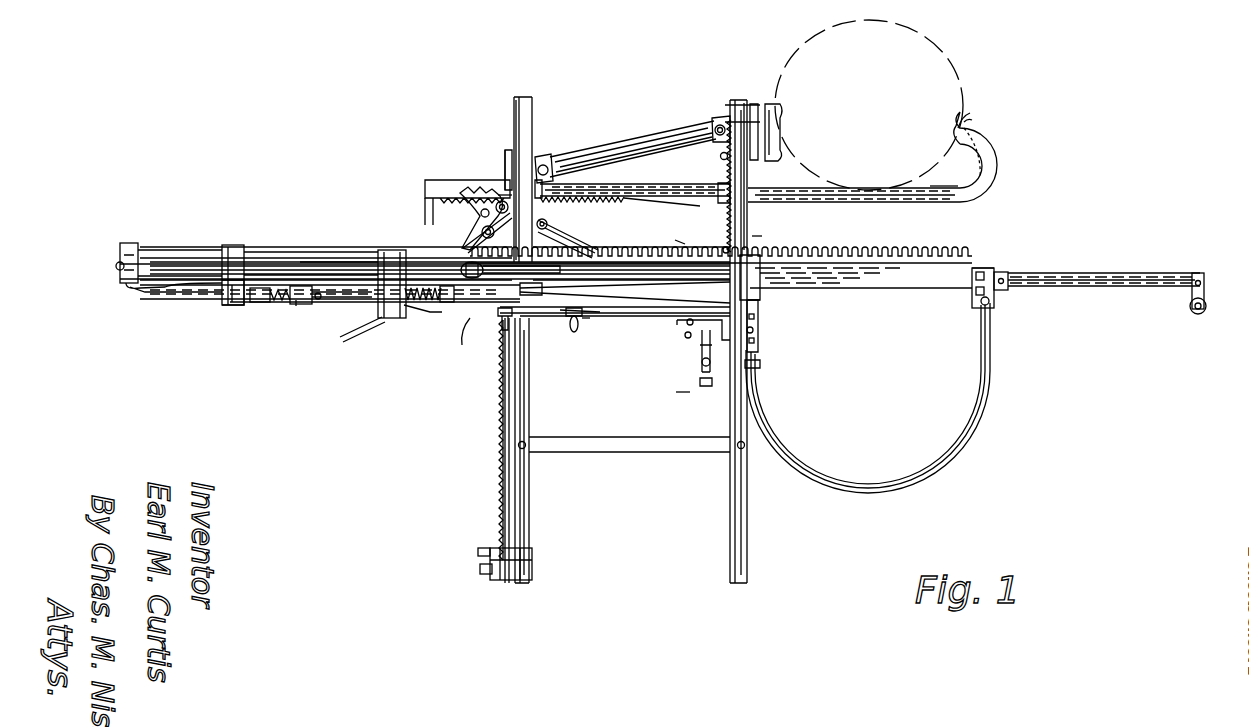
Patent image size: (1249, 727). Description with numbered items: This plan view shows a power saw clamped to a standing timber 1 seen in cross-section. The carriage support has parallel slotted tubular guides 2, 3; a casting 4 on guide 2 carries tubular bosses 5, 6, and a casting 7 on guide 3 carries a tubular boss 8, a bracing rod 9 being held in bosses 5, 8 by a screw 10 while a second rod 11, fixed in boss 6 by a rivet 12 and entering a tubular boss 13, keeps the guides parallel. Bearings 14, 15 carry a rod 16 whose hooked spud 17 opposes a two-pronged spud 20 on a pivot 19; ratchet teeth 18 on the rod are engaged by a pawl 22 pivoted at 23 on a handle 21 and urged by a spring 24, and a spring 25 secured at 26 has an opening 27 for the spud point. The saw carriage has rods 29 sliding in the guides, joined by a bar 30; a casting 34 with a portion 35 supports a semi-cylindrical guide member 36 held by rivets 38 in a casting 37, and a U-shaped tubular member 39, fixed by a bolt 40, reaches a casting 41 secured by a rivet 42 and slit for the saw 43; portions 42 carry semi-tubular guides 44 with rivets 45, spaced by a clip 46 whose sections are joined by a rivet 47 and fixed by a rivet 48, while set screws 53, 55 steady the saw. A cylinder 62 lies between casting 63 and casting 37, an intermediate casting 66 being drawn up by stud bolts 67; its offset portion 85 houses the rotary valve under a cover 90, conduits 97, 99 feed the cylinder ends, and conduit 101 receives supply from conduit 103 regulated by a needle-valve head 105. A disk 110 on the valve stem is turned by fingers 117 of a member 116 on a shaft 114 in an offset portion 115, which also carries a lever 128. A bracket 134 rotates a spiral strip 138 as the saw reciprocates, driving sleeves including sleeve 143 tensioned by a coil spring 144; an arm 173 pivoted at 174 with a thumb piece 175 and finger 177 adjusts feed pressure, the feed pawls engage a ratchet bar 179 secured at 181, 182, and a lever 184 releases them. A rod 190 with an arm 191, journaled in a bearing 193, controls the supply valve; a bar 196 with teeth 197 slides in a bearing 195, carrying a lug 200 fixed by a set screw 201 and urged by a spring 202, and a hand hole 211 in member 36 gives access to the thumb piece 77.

The timber 1 is at (950, 75).
The tubular guide 2 is at (531, 100).
The tubular guide 3 is at (745, 98).
The casting 4 is at (508, 152).
The tubular boss 5 is at (545, 155).
The tubular boss 6 is at (547, 222).
The casting 7 is at (720, 112).
The tubular boss 8 is at (718, 134).
The bracing rod 9 is at (620, 140).
The screw or rivet 10 is at (550, 160).
The second rod 11 is at (613, 250).
The rivet or screw 12 is at (590, 208).
The tubular boss 13 is at (530, 288).
The bearing 14 is at (510, 63).
The bearing 15 is at (500, 195).
The rod 16 is at (852, 208).
The spud 17 is at (994, 163).
The ratchet teeth 18 is at (652, 204).
The pivot 19 is at (750, 110).
The two-pronged spud 20 is at (786, 150).
The handle 21 is at (460, 242).
The pawl 22 is at (440, 186).
The pivot 23 is at (730, 103).
The spring 24 is at (470, 226).
The spring 25 is at (968, 128).
The securing point 26 is at (935, 180).
The opening 27 is at (952, 148).
The rods 29 is at (530, 520).
The bar 30 is at (628, 440).
The casting 34 is at (756, 302).
The portion 35 is at (724, 248).
The member 36 is at (667, 237).
The casting 37 is at (375, 252).
The rivets 38 is at (405, 258).
The U-shaped tubular member 39 is at (830, 478).
The bolt 40 is at (762, 336).
The casting 41 is at (997, 303).
The rivet 42 is at (995, 268).
The saw 43 is at (887, 290).
The semi-tubular member 44 is at (1105, 273).
The rivets 45 is at (1005, 275).
The clip 46 is at (1189, 318).
The rivet 47 is at (1190, 305).
The rivet 48 is at (1194, 278).
The set screw 53 is at (780, 225).
The set screws 55 is at (978, 266).
The tubular member 62 is at (270, 252).
The casting 63 is at (126, 258).
The casting 66 is at (232, 247).
The stud bolts 67 is at (150, 250).
The thumb piece 77 is at (462, 270).
The offset portion 85 is at (238, 302).
The cover 90 is at (222, 292).
The conduit 97 is at (160, 290).
The conduit 99 is at (365, 292).
The conduit 101 is at (272, 302).
The conduit 103 is at (336, 312).
The operating head 105 is at (405, 318).
The disk 110 is at (280, 302).
The shaft 114 is at (325, 302).
The offset portion 115 is at (395, 318).
The member 116 is at (296, 304).
The fingers 117 is at (292, 302).
The lever 128 is at (420, 318).
The bracket 134 is at (464, 308).
The spiral strip 138 is at (680, 325).
The sleeve 143 is at (425, 322).
The coil spring 144 is at (451, 336).
The arm 173 is at (700, 383).
The pivot 174 is at (686, 333).
The thumb piece 175 is at (700, 368).
The finger 177 is at (700, 355).
The bar 179 is at (676, 396).
The securing point 181 is at (722, 158).
The securing point 182 is at (724, 238).
The lever 184 is at (757, 372).
The rod 190 is at (592, 322).
The arm 191 is at (601, 338).
The bearing 193 is at (572, 320).
The bearing 195 is at (535, 573).
The bar 196 is at (486, 450).
The ratchet teeth 197 is at (482, 440).
The lug 200 is at (532, 560).
The set screw 201 is at (488, 548).
The spring 202 is at (492, 560).
The hand hole 211 is at (496, 270).